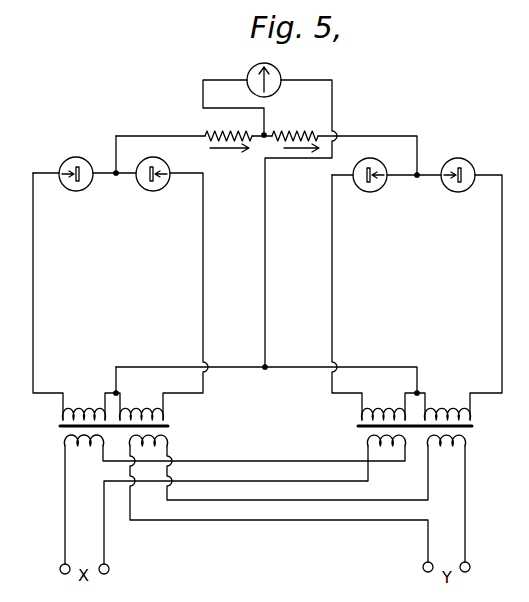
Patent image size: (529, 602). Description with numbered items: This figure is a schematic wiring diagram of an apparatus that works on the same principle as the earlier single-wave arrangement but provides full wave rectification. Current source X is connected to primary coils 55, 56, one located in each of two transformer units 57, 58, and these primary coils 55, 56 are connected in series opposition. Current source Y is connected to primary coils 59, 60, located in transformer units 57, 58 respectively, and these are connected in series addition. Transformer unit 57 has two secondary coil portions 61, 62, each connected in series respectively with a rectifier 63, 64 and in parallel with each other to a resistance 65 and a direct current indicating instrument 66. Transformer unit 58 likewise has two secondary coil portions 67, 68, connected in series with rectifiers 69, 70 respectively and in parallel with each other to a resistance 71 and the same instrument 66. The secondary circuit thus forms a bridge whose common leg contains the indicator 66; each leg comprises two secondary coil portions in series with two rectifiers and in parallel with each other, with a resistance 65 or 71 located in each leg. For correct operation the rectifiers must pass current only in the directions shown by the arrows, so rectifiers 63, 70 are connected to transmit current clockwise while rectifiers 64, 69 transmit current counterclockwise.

The primary coil 55 is at (71, 445).
The primary coil 56 is at (375, 440).
The transformer unit 57 is at (57, 428).
The transformer unit 58 is at (475, 426).
The primary coil 59 is at (142, 441).
The primary coil 60 is at (436, 444).
The secondary coil portion 61 is at (100, 404).
The secondary coil portion 62 is at (157, 394).
The rectifier 63 is at (75, 191).
The rectifier 64 is at (153, 191).
The resistance 65 is at (207, 141).
The direct current indicating instrument 66 is at (282, 75).
The secondary coil portion 67 is at (397, 394).
The secondary coil portion 68 is at (449, 404).
The rectifier 69 is at (366, 192).
The rectifier 70 is at (449, 192).
The resistance 71 is at (313, 132).